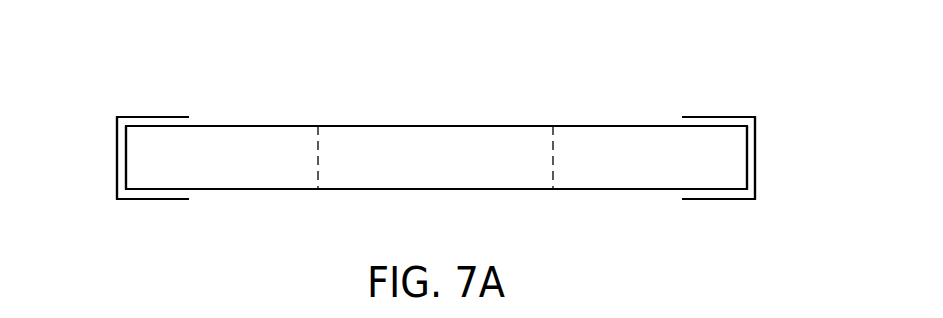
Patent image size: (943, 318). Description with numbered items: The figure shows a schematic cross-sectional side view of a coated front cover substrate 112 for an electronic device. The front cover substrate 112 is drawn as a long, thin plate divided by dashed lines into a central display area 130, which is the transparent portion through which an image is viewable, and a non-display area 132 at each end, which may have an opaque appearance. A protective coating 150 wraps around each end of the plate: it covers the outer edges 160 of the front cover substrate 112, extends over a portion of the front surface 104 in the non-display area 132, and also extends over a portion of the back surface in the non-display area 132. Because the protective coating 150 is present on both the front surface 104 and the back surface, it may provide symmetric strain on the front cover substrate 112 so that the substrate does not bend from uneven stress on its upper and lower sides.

The front surface 104 is at (648, 126).
The front cover substrate 112 is at (505, 103).
The display area 130 is at (525, 189).
The non-display area 132 is at (225, 189).
The protective coating 150 is at (140, 117).
The outer edges 160 is at (117, 158).